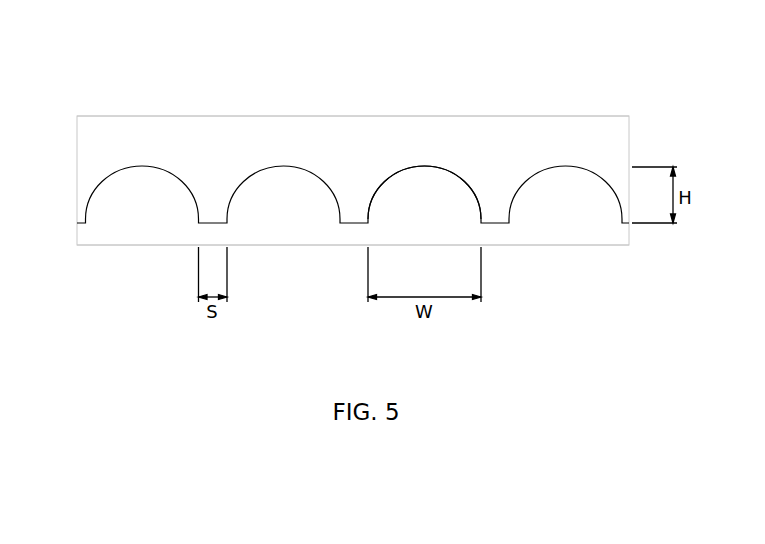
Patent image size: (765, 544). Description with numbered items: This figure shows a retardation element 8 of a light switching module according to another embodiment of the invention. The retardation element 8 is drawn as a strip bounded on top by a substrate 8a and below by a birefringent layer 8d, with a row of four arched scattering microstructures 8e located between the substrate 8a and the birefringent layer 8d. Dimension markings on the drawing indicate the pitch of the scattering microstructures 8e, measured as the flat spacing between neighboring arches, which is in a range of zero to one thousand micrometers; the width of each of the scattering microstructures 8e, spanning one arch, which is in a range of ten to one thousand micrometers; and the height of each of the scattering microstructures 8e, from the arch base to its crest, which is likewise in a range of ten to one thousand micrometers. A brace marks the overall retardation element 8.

The retardation element 8 is at (70, 116).
The substrate 8a is at (312, 128).
The scattering microstructures 8e is at (428, 158).
The birefringent layer 8d is at (572, 215).